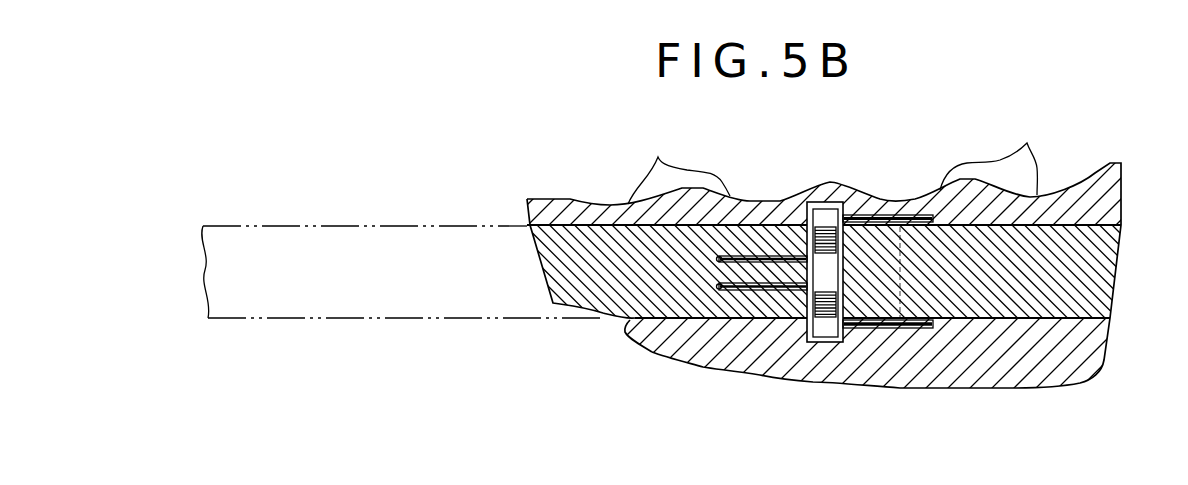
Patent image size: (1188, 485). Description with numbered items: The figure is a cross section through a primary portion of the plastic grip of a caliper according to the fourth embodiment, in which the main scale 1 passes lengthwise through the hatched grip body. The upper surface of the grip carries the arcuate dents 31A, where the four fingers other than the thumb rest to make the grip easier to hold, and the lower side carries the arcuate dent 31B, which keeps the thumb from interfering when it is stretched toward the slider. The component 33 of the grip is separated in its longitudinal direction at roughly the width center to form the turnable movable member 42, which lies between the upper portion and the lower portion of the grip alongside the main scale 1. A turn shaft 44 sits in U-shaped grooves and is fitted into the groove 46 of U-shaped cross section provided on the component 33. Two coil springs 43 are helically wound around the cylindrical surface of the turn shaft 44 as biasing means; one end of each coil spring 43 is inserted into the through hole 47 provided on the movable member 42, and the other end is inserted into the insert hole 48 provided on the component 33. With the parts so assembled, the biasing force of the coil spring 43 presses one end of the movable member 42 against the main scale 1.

The main scale 1 is at (350, 318).
The arcuate dents 31A is at (658, 157).
The arcuate dent 31B is at (630, 322).
The component 33 is at (1085, 345).
The movable member 42 is at (612, 260).
The coil springs 43 is at (895, 215).
The turn shaft 44 is at (825, 217).
The groove of U-shaped cross section 46 is at (810, 228).
The through hole 47 is at (771, 290).
The insert hole 48 is at (917, 330).